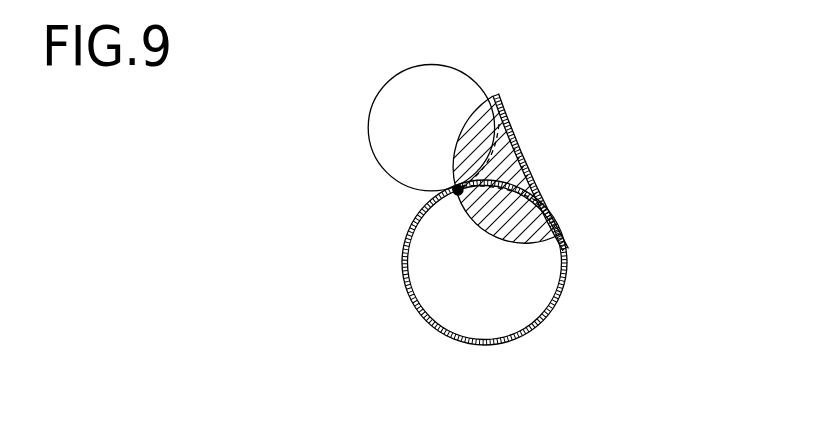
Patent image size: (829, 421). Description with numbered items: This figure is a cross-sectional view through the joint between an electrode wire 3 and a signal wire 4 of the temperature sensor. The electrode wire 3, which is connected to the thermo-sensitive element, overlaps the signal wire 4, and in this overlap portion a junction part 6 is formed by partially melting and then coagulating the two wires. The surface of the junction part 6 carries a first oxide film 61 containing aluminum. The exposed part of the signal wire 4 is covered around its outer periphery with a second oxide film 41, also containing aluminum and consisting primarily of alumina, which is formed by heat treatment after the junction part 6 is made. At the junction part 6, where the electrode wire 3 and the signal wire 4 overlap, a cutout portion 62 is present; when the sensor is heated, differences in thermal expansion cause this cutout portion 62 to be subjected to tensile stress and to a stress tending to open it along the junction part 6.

The electrode wire 3 is at (420, 105).
The signal wire 4 is at (457, 293).
The second oxide film 41 is at (543, 322).
The junction part 6 is at (548, 218).
The first oxide film 61 is at (527, 153).
The cutout portion 62 is at (458, 191).